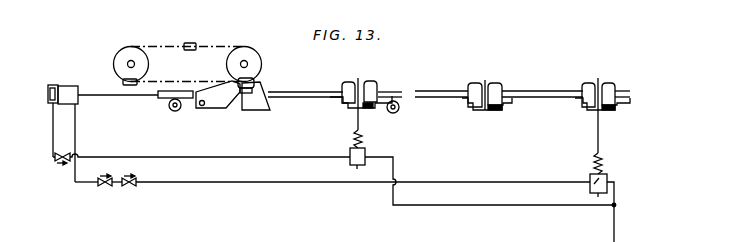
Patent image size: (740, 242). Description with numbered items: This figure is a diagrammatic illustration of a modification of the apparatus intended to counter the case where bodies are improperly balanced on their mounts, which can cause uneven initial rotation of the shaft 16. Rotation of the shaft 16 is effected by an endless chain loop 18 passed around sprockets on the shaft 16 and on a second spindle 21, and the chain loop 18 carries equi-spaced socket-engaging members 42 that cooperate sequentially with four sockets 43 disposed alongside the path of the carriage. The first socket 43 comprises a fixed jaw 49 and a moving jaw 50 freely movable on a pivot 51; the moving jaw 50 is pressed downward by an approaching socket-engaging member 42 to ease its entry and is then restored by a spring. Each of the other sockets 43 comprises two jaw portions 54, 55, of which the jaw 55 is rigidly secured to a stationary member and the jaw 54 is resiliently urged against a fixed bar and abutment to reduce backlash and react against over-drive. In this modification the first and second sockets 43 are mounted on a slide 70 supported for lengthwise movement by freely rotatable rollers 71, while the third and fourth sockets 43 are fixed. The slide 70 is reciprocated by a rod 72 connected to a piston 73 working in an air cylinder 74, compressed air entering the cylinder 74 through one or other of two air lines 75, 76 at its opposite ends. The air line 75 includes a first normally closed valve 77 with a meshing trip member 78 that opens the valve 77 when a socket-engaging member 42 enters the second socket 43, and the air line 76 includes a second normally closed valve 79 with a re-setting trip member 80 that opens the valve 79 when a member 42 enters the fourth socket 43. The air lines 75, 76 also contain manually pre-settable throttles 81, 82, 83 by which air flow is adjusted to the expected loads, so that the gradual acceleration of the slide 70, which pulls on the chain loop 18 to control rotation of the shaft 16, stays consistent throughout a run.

The shaft 16 is at (246, 61).
The endless chain loop 18 is at (222, 47).
The second spindle 21 is at (129, 61).
The socket-engaging member 42 is at (189, 44).
The socket 43 is at (234, 104).
The fixed jaw 49 is at (262, 95).
The moving jaw 50 is at (214, 93).
The pivot 51 is at (202, 106).
The jaw portion 54 is at (348, 82).
The jaw portion 55 is at (378, 87).
The slide 70 is at (302, 97).
The roller 71 is at (178, 110).
The rod 72 is at (145, 97).
The piston 73 is at (55, 85).
The air cylinder 74 is at (78, 98).
The air line 75 is at (53, 120).
The air line 76 is at (70, 136).
The first normally closed valve 77 is at (350, 158).
The trip member 78 is at (360, 80).
The second normally closed valve 79 is at (592, 178).
The re-setting trip member 80 is at (598, 82).
The throttle 81 is at (56, 163).
The throttle 82 is at (100, 188).
The throttle 83 is at (132, 188).